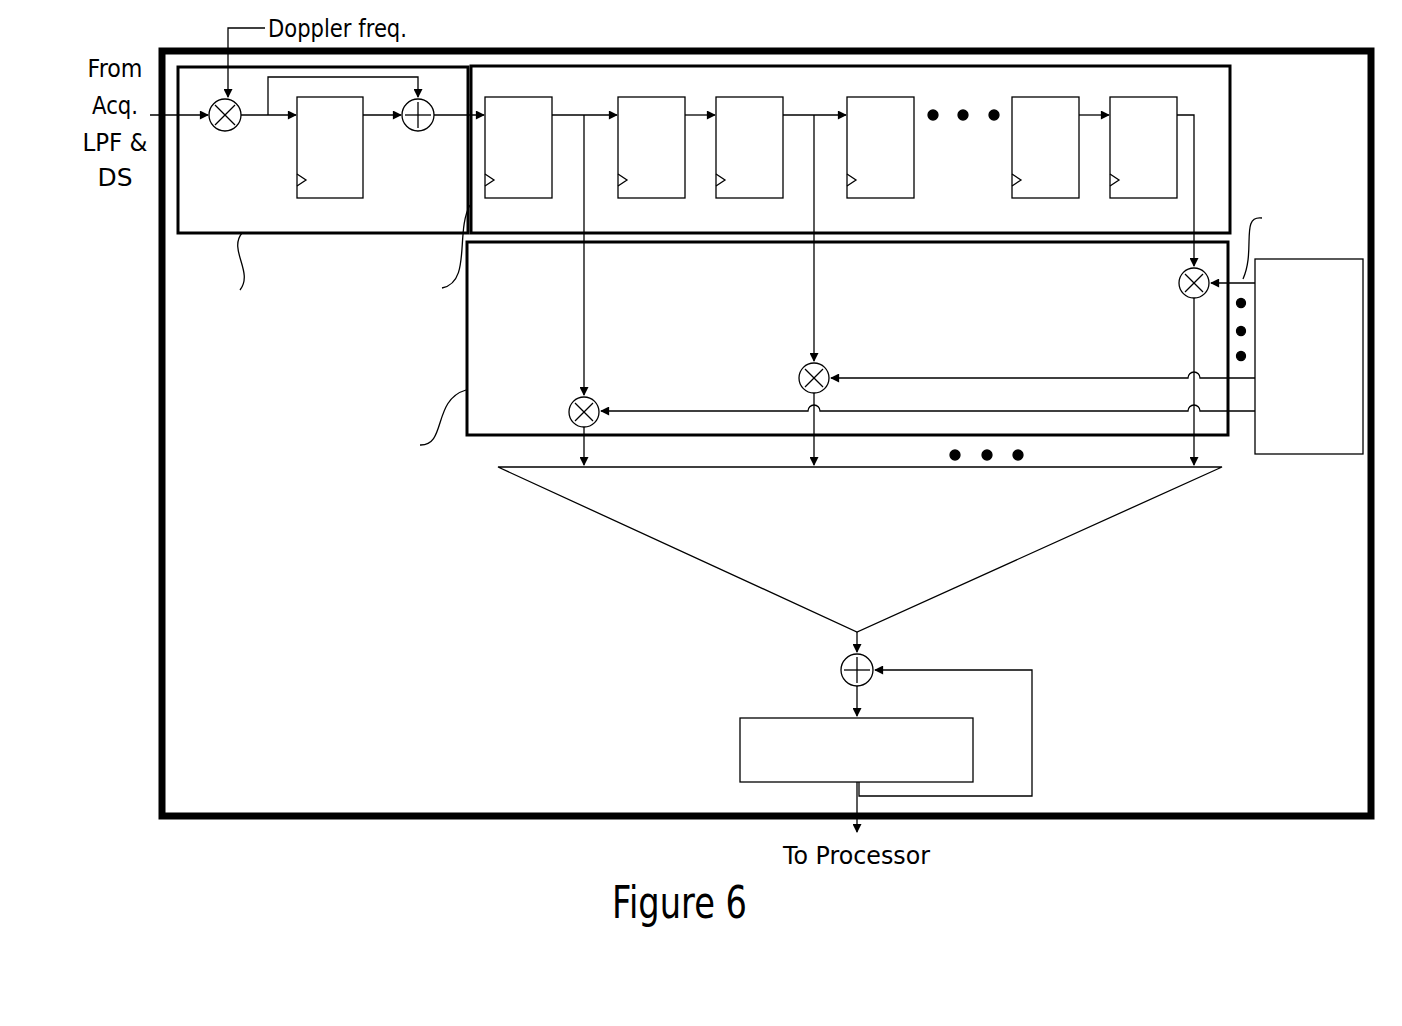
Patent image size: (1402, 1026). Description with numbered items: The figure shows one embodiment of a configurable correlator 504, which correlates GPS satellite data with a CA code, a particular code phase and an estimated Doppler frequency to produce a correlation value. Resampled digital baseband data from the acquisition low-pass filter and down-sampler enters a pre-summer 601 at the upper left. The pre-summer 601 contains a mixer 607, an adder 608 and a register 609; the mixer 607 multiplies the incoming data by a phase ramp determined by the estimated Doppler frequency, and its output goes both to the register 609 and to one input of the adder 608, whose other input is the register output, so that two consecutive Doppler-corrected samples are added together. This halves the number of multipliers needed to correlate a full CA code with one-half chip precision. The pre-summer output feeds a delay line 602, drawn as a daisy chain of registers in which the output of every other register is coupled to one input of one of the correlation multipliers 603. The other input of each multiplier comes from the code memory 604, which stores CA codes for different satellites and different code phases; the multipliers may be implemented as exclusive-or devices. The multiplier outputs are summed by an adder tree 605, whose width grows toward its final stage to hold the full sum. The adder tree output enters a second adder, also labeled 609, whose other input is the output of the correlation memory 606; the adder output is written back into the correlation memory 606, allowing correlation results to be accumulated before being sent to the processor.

The configurable correlator 504 is at (1353, 83).
The pre-summer 601 is at (463, 96).
The delay line 602 is at (1220, 94).
The correlation multipliers 603 is at (1158, 269).
The code memory 604 is at (1347, 292).
The adder tree 605 is at (1108, 499).
The correlation memory 606 is at (965, 744).
The mixer 607 is at (226, 131).
The adder 608 is at (418, 131).
The register 609 is at (347, 163).